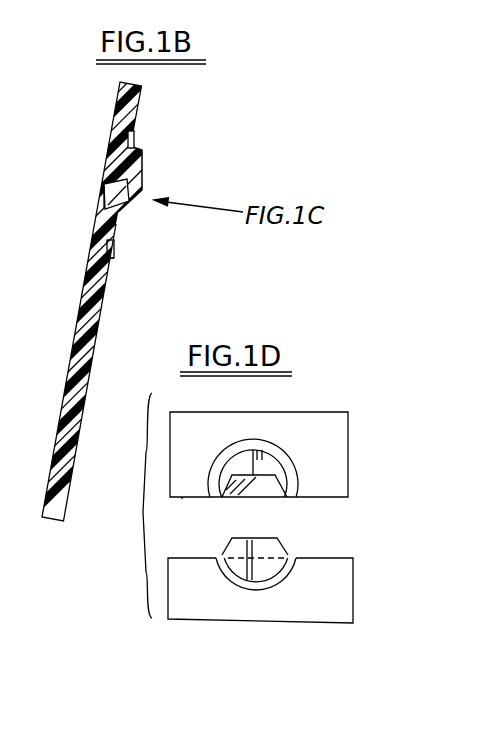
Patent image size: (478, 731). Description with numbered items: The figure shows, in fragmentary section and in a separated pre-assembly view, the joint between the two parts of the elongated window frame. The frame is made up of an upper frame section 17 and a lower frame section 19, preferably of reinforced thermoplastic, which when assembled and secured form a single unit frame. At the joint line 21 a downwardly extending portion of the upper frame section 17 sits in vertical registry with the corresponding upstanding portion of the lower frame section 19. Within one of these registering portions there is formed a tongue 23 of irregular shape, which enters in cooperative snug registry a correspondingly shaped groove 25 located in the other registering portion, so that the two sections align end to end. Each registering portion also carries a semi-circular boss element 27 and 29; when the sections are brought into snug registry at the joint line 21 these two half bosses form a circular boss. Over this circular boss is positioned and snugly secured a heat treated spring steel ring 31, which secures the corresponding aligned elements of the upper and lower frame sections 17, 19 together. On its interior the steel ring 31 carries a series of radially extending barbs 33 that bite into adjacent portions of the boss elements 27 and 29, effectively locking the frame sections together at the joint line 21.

In FIG. 1B, the upper frame section 17 is at (118, 110).
In FIG. 1D, the upper frame section 17 is at (310, 422).
In FIG. 1B, the lower frame section 19 is at (62, 403).
In FIG. 1D, the lower frame section 19 is at (203, 615).
In FIG. 1B, the joint line 21 is at (103, 210).
In FIG. 1D, the joint line 21 is at (182, 498).
In FIG. 1B, the tongue 23 is at (131, 203).
In FIG. 1D, the tongue 23 is at (236, 545).
In FIG. 1D, the groove 25 is at (268, 487).
In FIG. 1B, the semi-circular boss element 27 is at (136, 175).
In FIG. 1D, the semi-circular boss element 27 is at (270, 468).
In FIG. 1B, the semi-circular boss element 29 is at (122, 239).
In FIG. 1D, the semi-circular boss element 29 is at (272, 570).
In FIG. 1B, the spring steel ring 31 is at (113, 259).
In FIG. 1B, the radially extending barbs 33 is at (136, 143).